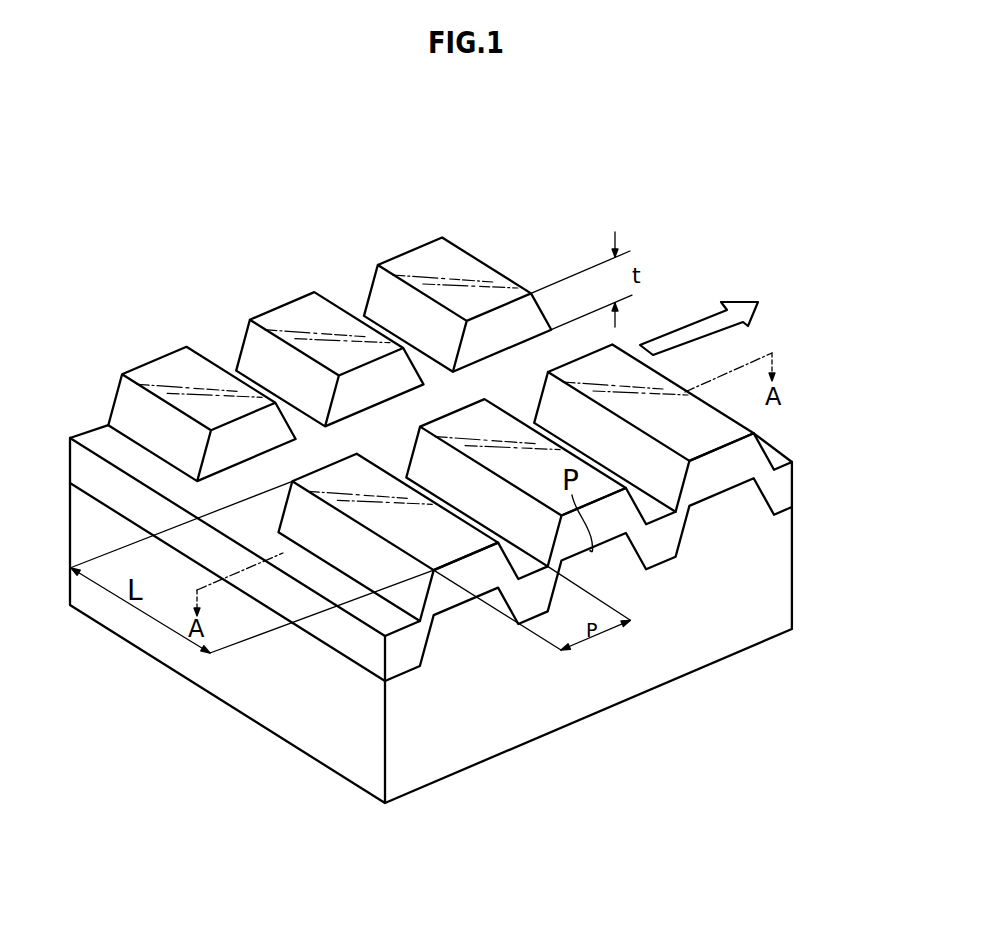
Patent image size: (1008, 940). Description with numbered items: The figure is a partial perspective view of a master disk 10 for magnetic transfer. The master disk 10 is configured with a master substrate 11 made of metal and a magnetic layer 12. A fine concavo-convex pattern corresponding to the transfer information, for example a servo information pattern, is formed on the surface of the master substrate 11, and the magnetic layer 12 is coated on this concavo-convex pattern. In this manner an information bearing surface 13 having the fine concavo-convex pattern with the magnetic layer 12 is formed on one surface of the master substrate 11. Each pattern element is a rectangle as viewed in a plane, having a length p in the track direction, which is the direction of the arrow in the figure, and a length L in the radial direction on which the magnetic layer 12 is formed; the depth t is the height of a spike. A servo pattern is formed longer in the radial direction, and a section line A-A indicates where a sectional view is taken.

The master disk 10 is at (195, 290).
The master substrate 11 is at (767, 595).
The magnetic layer 12 is at (782, 482).
The information bearing surface 13 is at (362, 480).